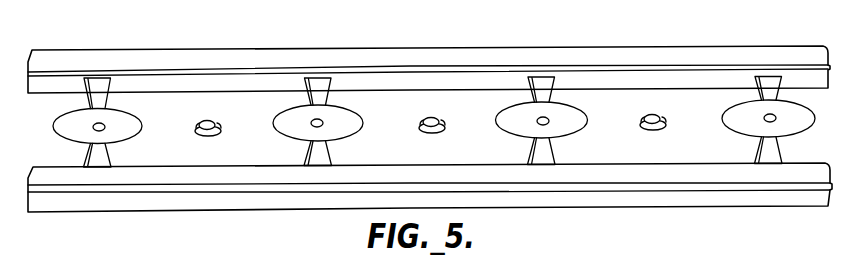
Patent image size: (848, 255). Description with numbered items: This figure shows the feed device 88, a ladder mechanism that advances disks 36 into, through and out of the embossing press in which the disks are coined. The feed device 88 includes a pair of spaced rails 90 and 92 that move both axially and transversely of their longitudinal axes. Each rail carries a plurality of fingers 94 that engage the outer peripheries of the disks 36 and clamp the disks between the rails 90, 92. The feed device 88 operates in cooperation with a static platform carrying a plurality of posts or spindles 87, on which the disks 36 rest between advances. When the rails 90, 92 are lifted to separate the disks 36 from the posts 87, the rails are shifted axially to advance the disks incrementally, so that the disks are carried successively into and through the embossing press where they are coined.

The feed device 88 is at (428, 123).
The rail 90 is at (448, 48).
The rail 92 is at (483, 192).
The disk 36 is at (58, 127).
The post 87 is at (104, 126).
The finger 94 is at (105, 99).